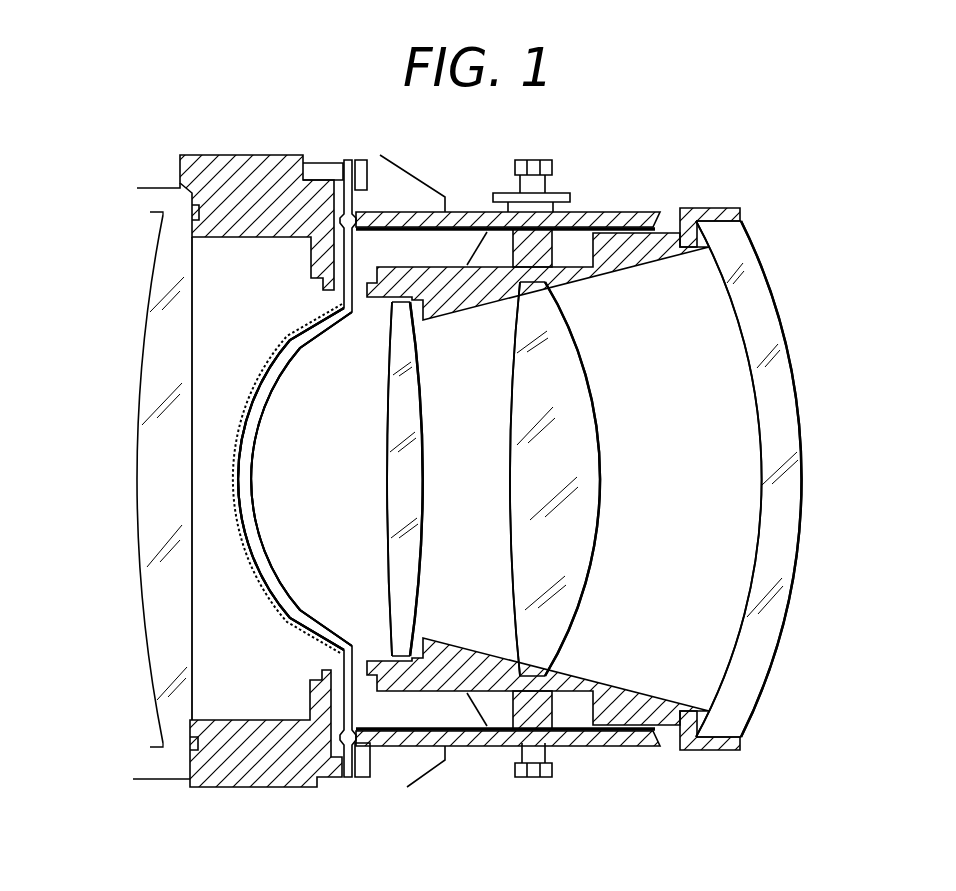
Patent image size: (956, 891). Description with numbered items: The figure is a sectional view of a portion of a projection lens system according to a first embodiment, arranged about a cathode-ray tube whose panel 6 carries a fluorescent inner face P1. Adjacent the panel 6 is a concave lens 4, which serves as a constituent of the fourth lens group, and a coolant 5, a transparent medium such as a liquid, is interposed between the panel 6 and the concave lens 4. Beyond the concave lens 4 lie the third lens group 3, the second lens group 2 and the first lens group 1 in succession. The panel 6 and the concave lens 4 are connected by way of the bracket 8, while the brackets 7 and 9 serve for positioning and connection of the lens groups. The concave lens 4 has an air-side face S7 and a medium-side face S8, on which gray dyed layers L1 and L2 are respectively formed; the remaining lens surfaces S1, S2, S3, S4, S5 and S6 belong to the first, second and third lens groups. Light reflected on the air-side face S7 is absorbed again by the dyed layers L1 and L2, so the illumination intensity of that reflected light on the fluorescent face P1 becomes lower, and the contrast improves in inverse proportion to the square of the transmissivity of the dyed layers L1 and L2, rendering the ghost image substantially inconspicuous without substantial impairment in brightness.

The first lens group 1 is at (783, 447).
The second lens group 2 is at (580, 450).
The third lens group 3 is at (405, 449).
The concave lens 4 is at (257, 437).
The coolant 5 is at (253, 345).
The panel 6 is at (173, 437).
The bracket 7 is at (665, 230).
The bracket 8 is at (241, 722).
The bracket 9 is at (597, 213).
The first surface of lens 1 S1 is at (783, 590).
The second surface of lens 1 S2 is at (752, 571).
The first surface of lens 2 S3 is at (585, 581).
The second surface of lens 2 S4 is at (515, 583).
The first surface of lens 3 S5 is at (415, 530).
The second surface of lens 3 S6 is at (388, 532).
The air-side face S7 is at (280, 565).
The medium-side face S8 is at (262, 585).
The gray dyed layer L1 is at (257, 505).
The gray dyed layer L2 is at (243, 525).
The fluorescent face P1 is at (140, 590).